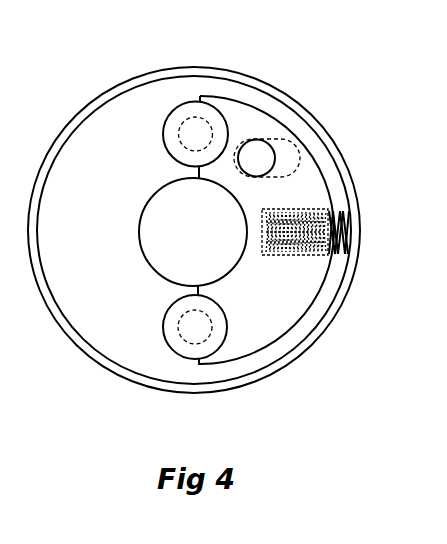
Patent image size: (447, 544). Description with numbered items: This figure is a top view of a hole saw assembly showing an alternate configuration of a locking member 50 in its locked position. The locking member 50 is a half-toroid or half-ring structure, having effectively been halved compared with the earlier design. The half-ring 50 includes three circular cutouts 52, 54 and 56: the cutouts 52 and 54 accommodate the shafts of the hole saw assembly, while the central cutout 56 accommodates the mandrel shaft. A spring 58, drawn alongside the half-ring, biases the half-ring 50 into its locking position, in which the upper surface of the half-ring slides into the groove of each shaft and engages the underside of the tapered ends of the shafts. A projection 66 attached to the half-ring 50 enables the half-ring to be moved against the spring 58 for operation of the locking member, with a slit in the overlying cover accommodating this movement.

The locking member 50 is at (290, 295).
The circular cutout 52 is at (206, 152).
The circular cutout 54 is at (210, 318).
The circular cutout 56 is at (248, 233).
The spring 58 is at (353, 220).
The projection 66 is at (257, 157).